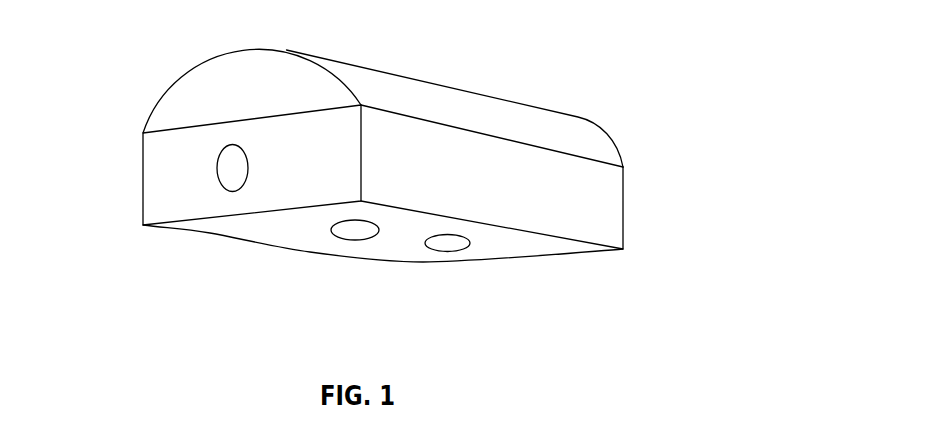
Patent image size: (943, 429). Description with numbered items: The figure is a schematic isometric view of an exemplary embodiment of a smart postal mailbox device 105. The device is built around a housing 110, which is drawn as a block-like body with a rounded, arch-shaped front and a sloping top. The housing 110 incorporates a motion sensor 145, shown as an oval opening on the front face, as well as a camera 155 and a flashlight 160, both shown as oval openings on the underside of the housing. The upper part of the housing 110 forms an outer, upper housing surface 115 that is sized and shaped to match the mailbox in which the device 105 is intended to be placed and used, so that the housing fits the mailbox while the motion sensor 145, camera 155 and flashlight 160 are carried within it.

The smart postal mailbox device 105 is at (330, 174).
The housing 110 is at (330, 137).
The upper housing surface 115 is at (413, 77).
The motion sensor 145 is at (218, 175).
The camera 155 is at (333, 231).
The flashlight 160 is at (470, 243).